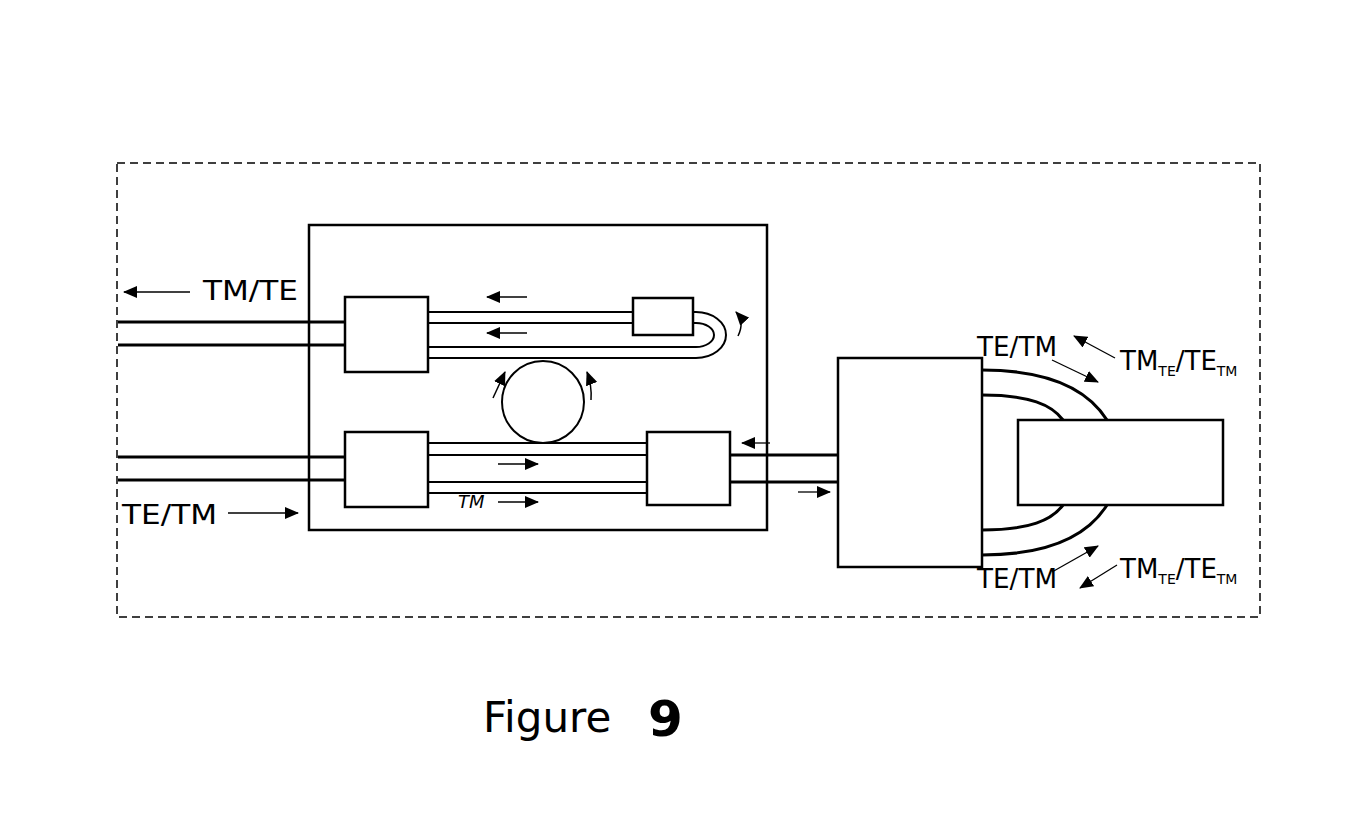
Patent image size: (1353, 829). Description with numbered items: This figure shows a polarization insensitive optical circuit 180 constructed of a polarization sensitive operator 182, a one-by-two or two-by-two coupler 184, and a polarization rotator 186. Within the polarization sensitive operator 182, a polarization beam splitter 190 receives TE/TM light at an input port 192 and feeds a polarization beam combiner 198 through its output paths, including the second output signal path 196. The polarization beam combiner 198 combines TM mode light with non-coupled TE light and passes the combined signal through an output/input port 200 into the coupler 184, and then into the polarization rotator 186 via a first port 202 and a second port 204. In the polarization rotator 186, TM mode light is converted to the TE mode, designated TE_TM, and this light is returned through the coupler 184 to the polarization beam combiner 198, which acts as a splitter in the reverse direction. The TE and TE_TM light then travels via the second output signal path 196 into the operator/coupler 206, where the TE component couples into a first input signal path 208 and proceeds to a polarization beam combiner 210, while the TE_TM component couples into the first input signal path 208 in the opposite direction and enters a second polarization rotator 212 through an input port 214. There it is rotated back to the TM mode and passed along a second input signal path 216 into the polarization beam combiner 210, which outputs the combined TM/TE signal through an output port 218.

The polarization insensitive optical circuit 180 is at (586, 90).
The polarization sensitive operator 182 is at (307, 244).
The 1×2 or 2×2 coupler 184 is at (900, 358).
The polarization rotator 186 is at (1225, 458).
The polarization beam splitter 190 is at (362, 431).
The input port 192 is at (160, 455).
The second output signal path 196 is at (444, 440).
The polarization beam combiner 198 is at (668, 432).
The output/input port 200 is at (753, 483).
The first port 202 is at (1100, 517).
The second port 204 is at (1105, 403).
The operator/coupler 206 is at (585, 428).
The first input signal path 208 is at (457, 360).
The polarization beam combiner 210 is at (389, 296).
The second polarization rotator 212 is at (667, 298).
The input port 214 is at (708, 318).
The second input signal path 216 is at (592, 311).
The output port 218 is at (156, 347).